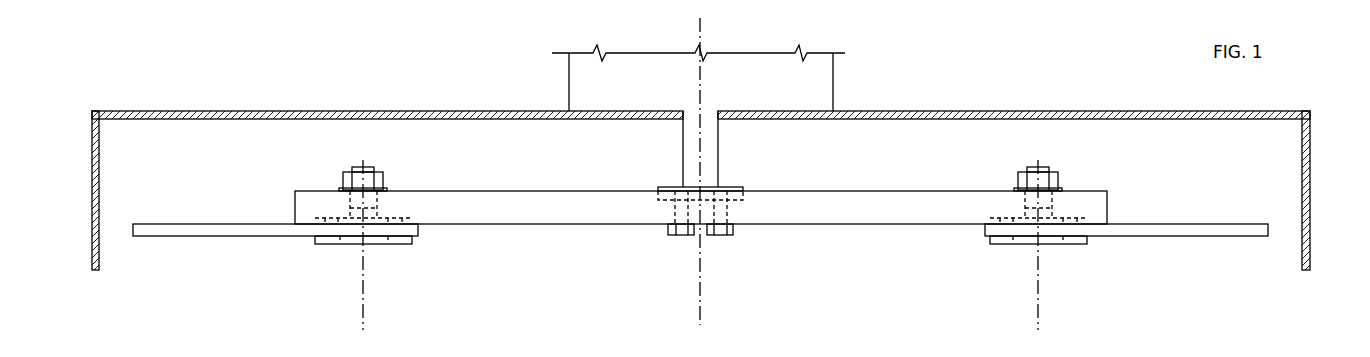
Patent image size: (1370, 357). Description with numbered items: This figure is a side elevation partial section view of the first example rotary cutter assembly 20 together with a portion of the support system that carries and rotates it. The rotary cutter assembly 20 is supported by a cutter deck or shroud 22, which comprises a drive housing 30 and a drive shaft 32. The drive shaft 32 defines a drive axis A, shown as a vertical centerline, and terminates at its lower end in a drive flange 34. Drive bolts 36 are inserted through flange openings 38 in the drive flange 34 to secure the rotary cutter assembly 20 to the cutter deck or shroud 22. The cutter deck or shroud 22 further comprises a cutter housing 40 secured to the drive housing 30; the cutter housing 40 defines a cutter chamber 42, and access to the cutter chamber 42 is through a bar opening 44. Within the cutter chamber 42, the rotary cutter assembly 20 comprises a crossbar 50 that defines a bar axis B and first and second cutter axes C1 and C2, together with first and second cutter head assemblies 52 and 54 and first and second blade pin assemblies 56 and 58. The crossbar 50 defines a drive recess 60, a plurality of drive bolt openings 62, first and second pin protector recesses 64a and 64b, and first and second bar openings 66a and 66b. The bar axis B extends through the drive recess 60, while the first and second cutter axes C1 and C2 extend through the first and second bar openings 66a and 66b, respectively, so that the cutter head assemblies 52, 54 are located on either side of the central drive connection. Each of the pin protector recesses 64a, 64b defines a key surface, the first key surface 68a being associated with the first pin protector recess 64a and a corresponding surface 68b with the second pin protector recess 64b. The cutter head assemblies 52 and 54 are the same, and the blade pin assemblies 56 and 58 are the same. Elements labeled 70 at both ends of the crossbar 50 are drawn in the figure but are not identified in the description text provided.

The rotary cutter assembly 20 is at (716, 181).
The cutter deck or shroud 22 is at (716, 181).
The drive housing 30 is at (833, 90).
The drive shaft 32 is at (718, 148).
The drive flange 34 is at (660, 187).
The drive bolts 36 is at (680, 236).
The flange openings 38 is at (676, 191).
The cutter housing 40 is at (990, 111).
The cutter chamber 42 is at (887, 161).
The bar opening 44 is at (1278, 272).
The crossbar 50 is at (865, 205).
The first cutter head assembly 52 is at (345, 223).
The second cutter head assembly 54 is at (1060, 220).
The first blade pin assembly 56 is at (385, 170).
The second blade pin assembly 58 is at (1016, 170).
The drive recess 60 is at (735, 205).
The drive bolt openings 62 is at (670, 208).
The first pin protector recess 64a is at (345, 208).
The second pin protector recess 64b is at (1057, 208).
The first bar opening 66a is at (348, 208).
The second bar opening 66b is at (1055, 208).
The first key surface 68a is at (380, 210).
The second hidden flange 68b is at (1022, 210).
The panel plates 70 is at (195, 232).
The drive axis A is at (700, 92).
The bar axis B is at (700, 283).
The first cutter axis C1 is at (363, 298).
The second cutter axis C2 is at (1038, 298).